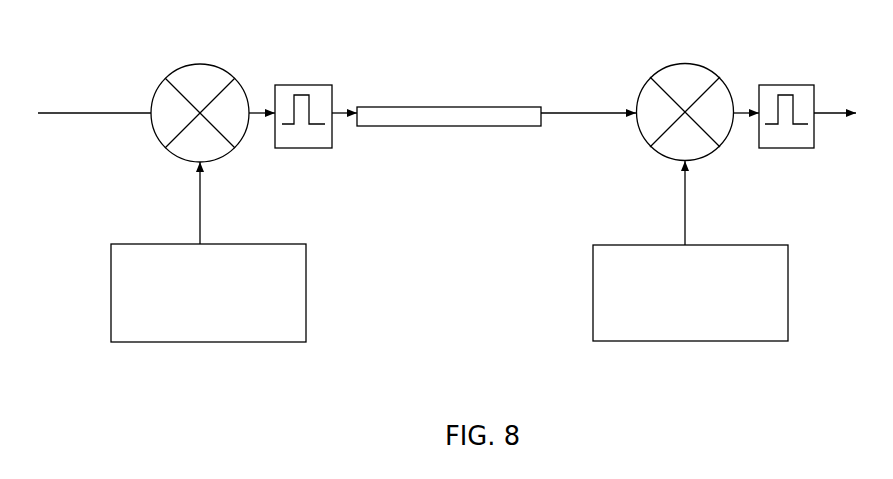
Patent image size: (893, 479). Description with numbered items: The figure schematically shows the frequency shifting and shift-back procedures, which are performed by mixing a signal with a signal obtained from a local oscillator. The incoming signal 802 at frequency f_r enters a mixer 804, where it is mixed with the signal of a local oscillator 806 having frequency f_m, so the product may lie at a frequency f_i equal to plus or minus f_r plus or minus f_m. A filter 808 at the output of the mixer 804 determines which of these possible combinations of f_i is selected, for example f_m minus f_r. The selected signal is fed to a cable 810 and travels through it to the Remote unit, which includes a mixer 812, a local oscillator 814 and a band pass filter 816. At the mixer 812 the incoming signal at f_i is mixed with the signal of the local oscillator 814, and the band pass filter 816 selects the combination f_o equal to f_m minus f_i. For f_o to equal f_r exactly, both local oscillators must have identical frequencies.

The input signal f_r 802 is at (39, 126).
The mixer 804 is at (166, 62).
The local oscillator 806 is at (310, 288).
The filter 808 is at (310, 153).
The cable 810 is at (447, 132).
The mixer 812 is at (648, 60).
The local oscillator 814 is at (800, 290).
The band pass filter 816 is at (795, 153).